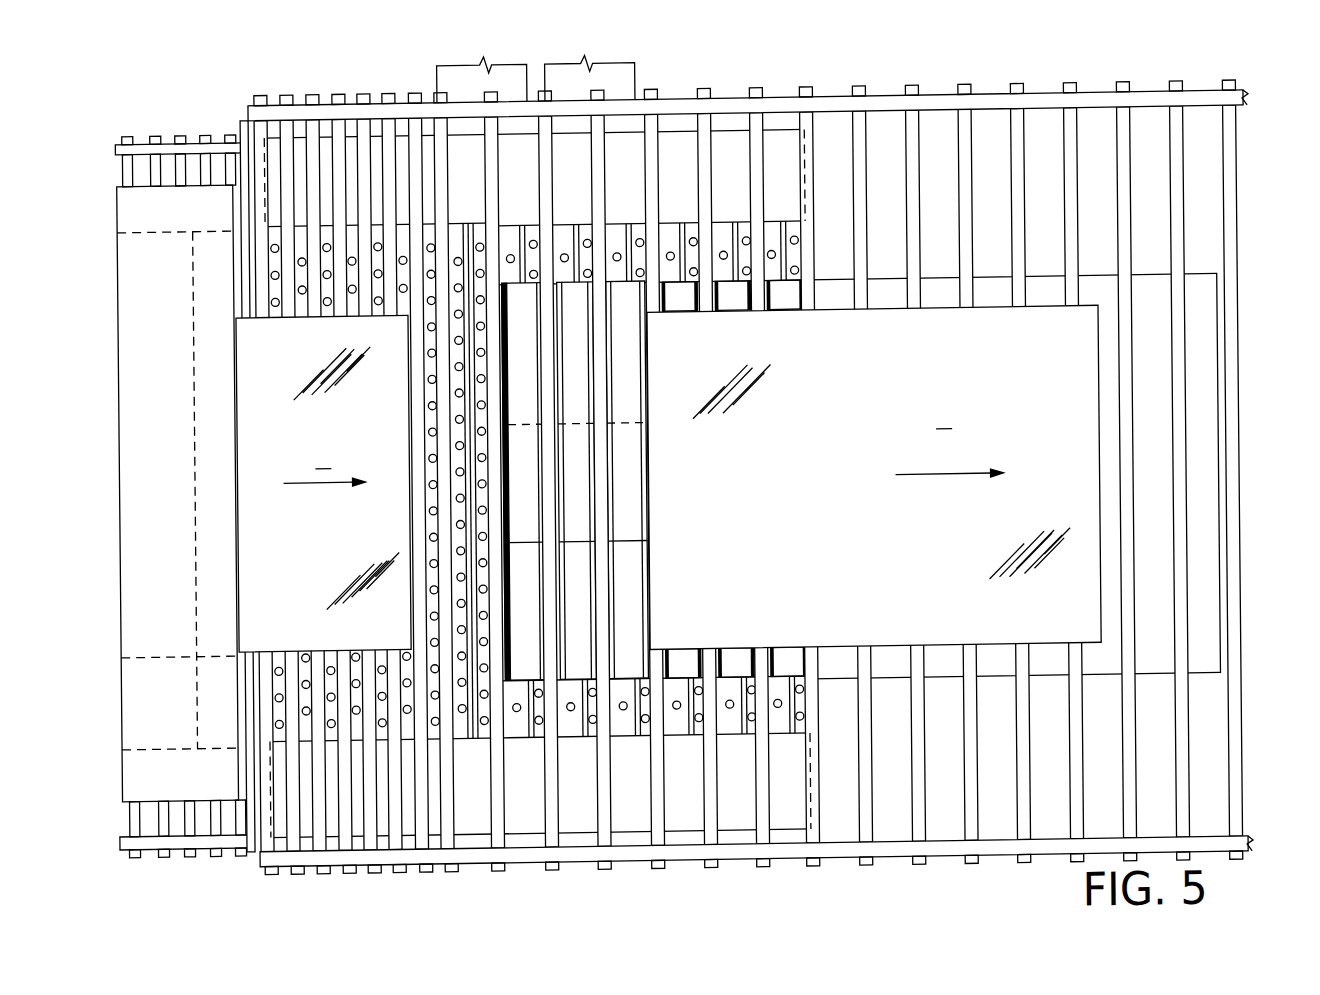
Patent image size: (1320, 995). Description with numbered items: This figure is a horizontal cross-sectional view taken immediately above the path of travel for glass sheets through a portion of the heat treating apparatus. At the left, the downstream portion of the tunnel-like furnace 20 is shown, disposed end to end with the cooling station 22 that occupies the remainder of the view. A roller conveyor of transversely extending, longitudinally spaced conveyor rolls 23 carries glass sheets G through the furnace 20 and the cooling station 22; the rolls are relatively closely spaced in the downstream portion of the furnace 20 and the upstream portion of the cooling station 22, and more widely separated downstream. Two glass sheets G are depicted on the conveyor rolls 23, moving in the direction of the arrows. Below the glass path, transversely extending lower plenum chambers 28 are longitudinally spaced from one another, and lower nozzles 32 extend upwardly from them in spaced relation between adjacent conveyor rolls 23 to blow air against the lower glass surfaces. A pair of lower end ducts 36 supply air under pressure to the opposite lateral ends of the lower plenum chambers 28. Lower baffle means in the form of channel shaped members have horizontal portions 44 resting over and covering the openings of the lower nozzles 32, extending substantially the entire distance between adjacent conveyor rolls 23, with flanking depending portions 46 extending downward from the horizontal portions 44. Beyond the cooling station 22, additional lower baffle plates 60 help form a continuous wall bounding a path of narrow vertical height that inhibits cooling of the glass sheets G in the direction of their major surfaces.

The tunnel-like furnace 20 is at (166, 176).
The cooling station 22 is at (366, 80).
The conveyor rolls 23 is at (1236, 210).
The lower plenum chambers 28 is at (536, 747).
The lower nozzles 32 is at (532, 243).
The lower end ducts 36 is at (785, 843).
The horizontal portions 44 is at (532, 340).
The depending portions 46 is at (540, 404).
The additional lower baffle plates 60 is at (1192, 287).
The glass sheets G is at (668, 480).